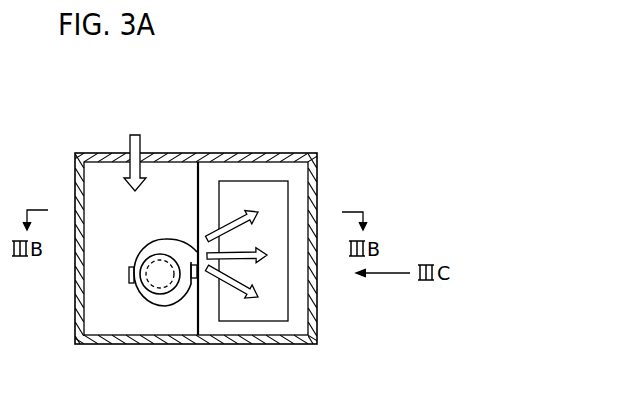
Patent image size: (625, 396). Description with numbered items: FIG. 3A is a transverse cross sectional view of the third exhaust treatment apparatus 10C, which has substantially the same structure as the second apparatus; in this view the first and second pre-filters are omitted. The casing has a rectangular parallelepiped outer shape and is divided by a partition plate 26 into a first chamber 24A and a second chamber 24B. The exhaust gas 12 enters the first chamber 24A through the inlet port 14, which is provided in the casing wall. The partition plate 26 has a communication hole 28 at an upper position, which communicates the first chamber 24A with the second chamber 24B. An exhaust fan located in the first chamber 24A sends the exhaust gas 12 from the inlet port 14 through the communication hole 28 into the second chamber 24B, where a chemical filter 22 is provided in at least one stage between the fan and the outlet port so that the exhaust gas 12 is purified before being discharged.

The third exhaust treatment apparatus 10C is at (95, 90).
The exhaust gas 12 is at (143, 145).
The inlet port 14 is at (103, 152).
The chemical filter 22 is at (250, 190).
The first chamber 24A is at (98, 285).
The second chamber 24B is at (298, 287).
The partition plate 26 is at (197, 206).
The communication hole 28 is at (195, 237).